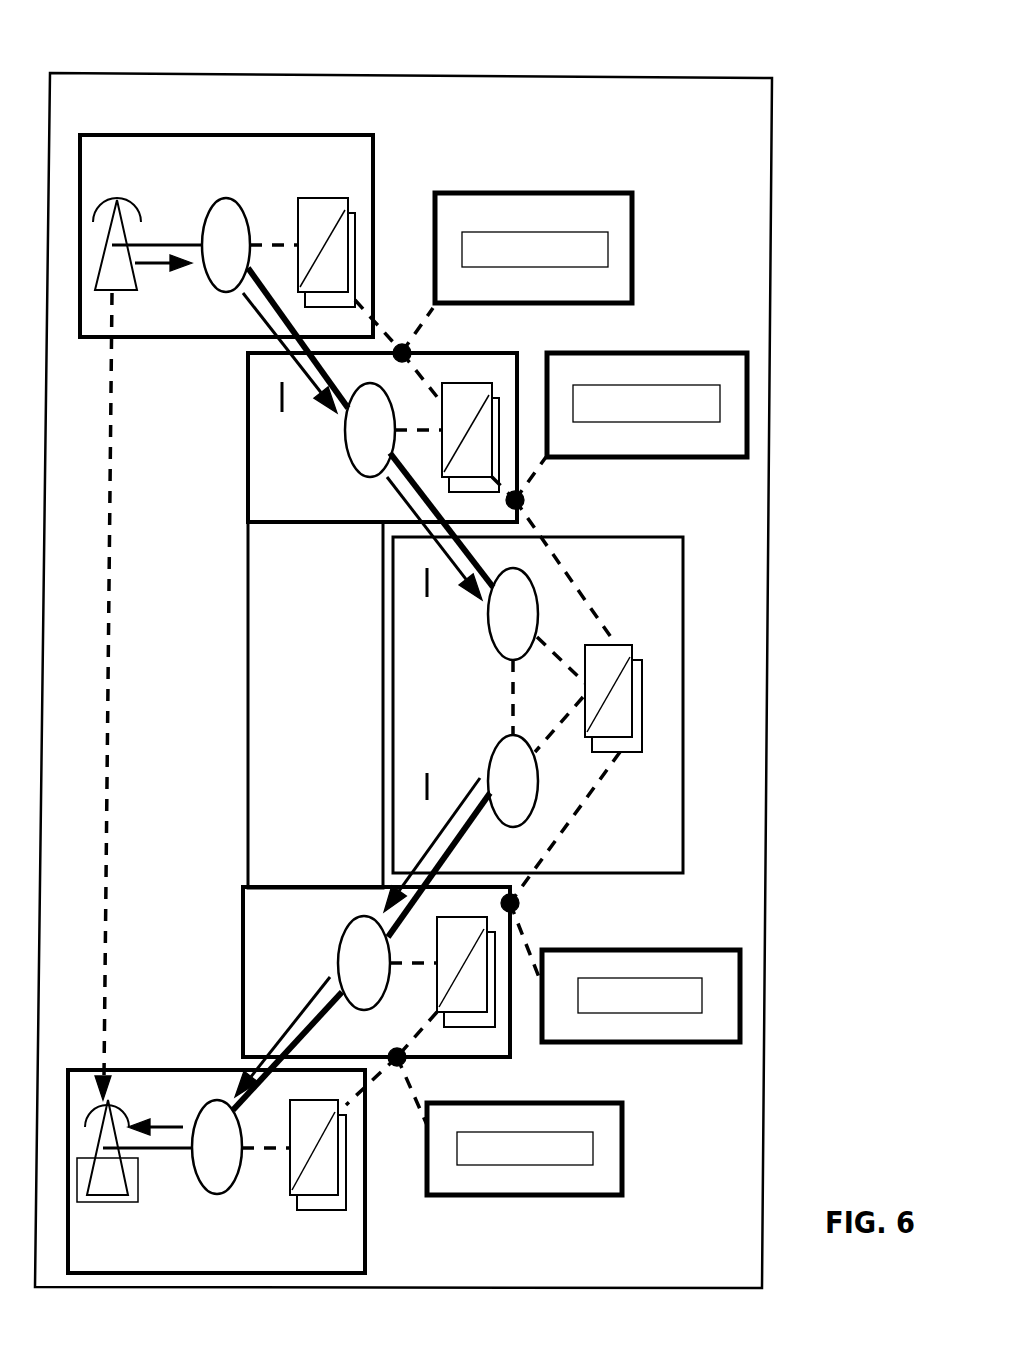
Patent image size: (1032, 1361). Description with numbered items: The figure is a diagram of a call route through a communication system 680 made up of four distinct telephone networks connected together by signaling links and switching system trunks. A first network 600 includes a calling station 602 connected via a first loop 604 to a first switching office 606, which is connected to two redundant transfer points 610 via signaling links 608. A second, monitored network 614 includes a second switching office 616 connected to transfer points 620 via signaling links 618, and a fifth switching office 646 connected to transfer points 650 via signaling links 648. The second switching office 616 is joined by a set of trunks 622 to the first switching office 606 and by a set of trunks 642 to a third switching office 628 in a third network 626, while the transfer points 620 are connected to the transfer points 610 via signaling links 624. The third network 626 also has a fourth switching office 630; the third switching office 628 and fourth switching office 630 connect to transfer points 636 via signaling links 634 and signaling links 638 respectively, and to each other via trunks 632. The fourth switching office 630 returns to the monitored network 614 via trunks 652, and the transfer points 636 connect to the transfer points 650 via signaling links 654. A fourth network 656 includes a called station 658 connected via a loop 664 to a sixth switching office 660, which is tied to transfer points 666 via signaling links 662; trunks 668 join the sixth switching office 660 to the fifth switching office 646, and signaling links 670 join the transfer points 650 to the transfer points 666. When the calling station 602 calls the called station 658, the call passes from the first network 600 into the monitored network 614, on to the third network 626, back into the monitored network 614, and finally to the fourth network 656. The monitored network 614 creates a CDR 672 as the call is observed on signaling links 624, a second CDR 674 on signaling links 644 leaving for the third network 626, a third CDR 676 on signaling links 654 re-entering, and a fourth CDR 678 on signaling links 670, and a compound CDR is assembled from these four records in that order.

The first network 600 is at (97, 133).
The calling station 602 is at (117, 244).
The first loop 604 is at (168, 240).
The first switching office 606 is at (226, 245).
The signaling links 608 is at (280, 243).
The transfer points 610 is at (326, 252).
The monitored network 614 is at (245, 547).
The second switching office 616 is at (370, 430).
The signaling links 618 is at (412, 373).
The transfer points 620 is at (470, 437).
The trunks 622 is at (262, 297).
The signaling links 624 is at (380, 305).
The third network 626 is at (688, 613).
The third switching office 628 is at (513, 614).
The fourth switching office 630 is at (513, 781).
The trunks 632 is at (508, 672).
The signaling links 634 is at (552, 653).
The transfer points 636 is at (613, 698).
The signaling links 638 is at (562, 720).
The trunks 642 is at (412, 492).
The signaling links 644 is at (587, 600).
The fifth switching office 646 is at (364, 963).
The signaling links 648 is at (397, 960).
The transfer points 650 is at (466, 972).
The trunks 652 is at (427, 858).
The signaling links 654 is at (577, 817).
The fourth network 656 is at (88, 1068).
The called station 658 is at (107, 1151).
The sixth switching office 660 is at (217, 1147).
The signaling links 662 is at (247, 1152).
The loop 664 is at (135, 1150).
The transfer points 666 is at (318, 1155).
The trunks 668 is at (308, 1042).
The signaling links 670 is at (422, 1027).
The CDR 672 is at (533, 248).
The second CDR 674 is at (647, 405).
The third CDR 676 is at (641, 996).
The fourth CDR 678 is at (524, 1149).
The communication system 680 is at (125, 72).